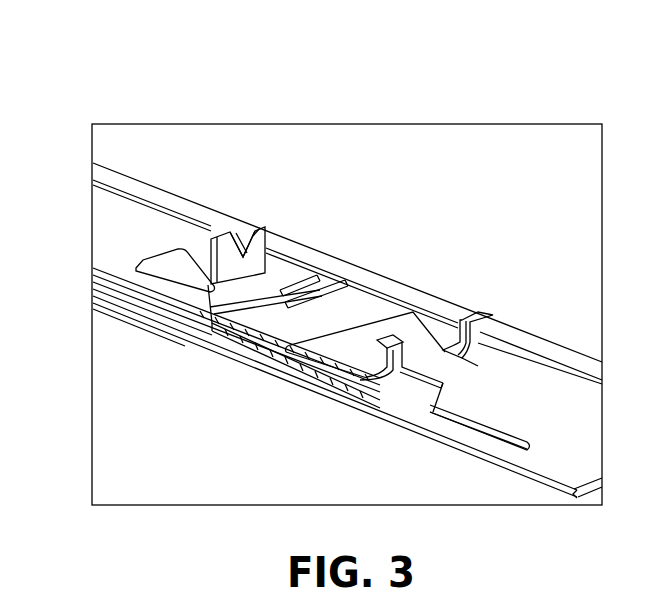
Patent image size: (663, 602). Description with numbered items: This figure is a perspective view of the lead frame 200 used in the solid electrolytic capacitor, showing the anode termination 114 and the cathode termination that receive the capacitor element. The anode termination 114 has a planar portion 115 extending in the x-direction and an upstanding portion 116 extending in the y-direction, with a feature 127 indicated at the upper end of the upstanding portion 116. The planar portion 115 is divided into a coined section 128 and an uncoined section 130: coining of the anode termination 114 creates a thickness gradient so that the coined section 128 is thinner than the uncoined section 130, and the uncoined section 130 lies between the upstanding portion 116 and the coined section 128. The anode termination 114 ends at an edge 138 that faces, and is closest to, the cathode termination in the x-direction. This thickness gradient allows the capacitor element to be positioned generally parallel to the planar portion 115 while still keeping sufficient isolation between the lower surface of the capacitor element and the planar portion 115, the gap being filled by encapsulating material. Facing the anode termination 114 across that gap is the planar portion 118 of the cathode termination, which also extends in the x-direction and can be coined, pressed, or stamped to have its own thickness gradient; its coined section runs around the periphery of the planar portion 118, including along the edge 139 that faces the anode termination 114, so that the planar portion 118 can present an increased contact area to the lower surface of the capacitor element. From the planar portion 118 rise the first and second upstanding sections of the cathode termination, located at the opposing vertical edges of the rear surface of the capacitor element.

The lead frame 200 is at (476, 90).
The anode termination 114 is at (165, 298).
The planar portion 115 is at (160, 309).
The upstanding portion 116 is at (265, 228).
The notch 127 is at (265, 243).
The coined section 128 is at (213, 318).
The uncoined section 130 is at (190, 298).
The edge 138 is at (280, 320).
The edge 139 is at (352, 327).
The planar portion 118 is at (315, 365).